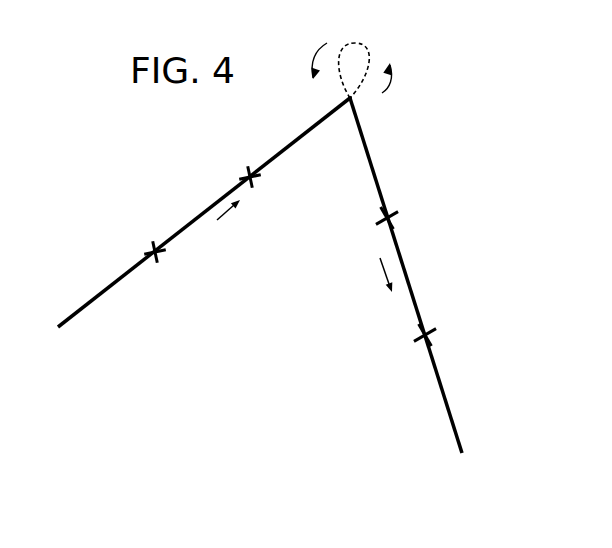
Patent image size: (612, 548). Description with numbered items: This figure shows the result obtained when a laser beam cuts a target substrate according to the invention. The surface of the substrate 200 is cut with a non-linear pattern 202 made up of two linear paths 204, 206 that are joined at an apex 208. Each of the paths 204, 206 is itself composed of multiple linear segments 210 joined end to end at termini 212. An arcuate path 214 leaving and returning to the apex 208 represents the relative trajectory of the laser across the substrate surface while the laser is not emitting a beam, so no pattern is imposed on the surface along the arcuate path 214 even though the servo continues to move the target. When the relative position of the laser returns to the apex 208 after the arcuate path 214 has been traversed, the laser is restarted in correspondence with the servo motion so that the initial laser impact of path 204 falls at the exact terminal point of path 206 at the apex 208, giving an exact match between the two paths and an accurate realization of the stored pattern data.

The substrate 200 is at (210, 463).
The non-linear pattern 202 is at (352, 418).
The linear path 204 is at (462, 453).
The linear path 206 is at (58, 327).
The apex 208 is at (352, 98).
The linear segments 210 is at (408, 268).
The termini 212 is at (392, 216).
The arcuate path 214 is at (373, 50).